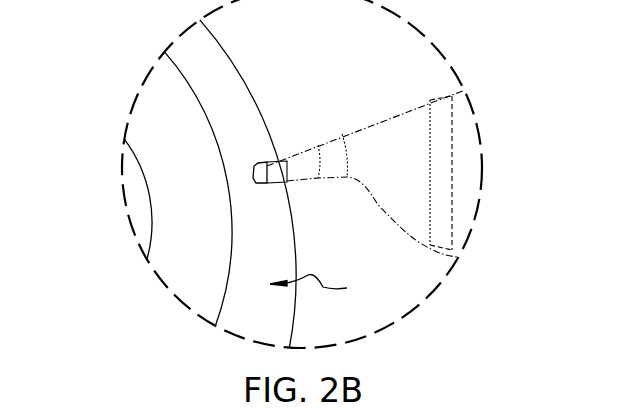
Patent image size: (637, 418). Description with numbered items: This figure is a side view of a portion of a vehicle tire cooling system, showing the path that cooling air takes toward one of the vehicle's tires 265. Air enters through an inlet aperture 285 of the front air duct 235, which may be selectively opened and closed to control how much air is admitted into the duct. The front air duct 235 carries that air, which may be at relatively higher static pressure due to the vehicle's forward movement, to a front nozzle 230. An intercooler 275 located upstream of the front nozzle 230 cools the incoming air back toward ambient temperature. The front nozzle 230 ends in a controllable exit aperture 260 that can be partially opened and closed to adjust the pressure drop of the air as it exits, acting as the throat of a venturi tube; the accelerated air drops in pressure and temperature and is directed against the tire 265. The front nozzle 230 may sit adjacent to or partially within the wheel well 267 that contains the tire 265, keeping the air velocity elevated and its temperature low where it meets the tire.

The front nozzle 230 is at (260, 165).
The front air duct 235 is at (397, 112).
The controllable exit aperture 260 is at (278, 182).
The tire 265 is at (157, 112).
The wheel well 267 is at (332, 288).
The intercooler 275 is at (335, 147).
The inlet aperture 285 is at (443, 230).